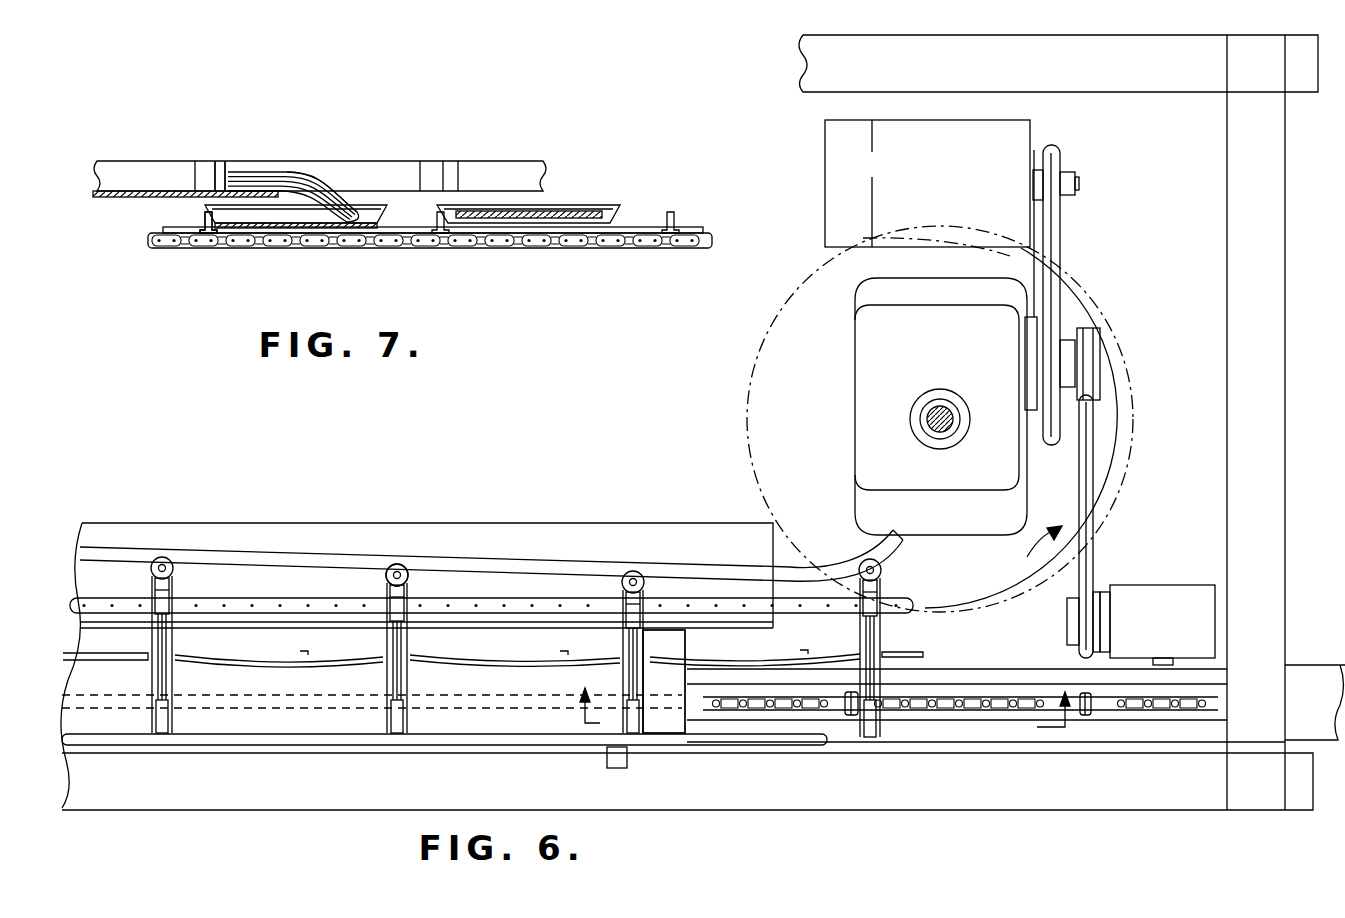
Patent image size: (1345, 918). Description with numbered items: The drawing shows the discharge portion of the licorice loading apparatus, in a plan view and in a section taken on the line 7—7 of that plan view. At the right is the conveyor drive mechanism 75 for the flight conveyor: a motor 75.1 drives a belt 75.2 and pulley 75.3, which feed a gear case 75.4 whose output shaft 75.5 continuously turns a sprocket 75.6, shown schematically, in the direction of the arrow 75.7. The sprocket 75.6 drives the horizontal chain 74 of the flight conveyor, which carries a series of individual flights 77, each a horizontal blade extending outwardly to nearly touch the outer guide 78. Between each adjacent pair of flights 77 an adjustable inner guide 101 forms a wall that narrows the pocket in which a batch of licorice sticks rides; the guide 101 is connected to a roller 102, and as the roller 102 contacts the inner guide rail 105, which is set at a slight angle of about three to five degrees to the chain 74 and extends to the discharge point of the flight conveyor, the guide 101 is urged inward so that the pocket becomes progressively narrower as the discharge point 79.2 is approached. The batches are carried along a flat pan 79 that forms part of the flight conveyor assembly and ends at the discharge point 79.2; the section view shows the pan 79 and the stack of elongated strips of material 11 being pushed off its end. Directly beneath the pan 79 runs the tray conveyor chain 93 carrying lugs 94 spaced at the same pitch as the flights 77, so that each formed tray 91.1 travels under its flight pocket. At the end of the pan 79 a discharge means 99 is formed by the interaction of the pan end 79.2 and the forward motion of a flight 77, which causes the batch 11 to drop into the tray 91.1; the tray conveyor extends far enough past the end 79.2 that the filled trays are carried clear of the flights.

In FIG. 7, the elongated strips of material 11 is at (320, 200).
In FIG. 6, the horizontal chain 74 is at (202, 597).
In FIG. 6, the conveyor drive mechanism 75 is at (852, 421).
In FIG. 6, the motor 75.1 is at (1030, 133).
In FIG. 6, the belt 75.2 is at (1050, 243).
In FIG. 6, the pulley 75.3 is at (1060, 304).
In FIG. 6, the gear case 75.4 is at (853, 330).
In FIG. 6, the output shaft 75.5 is at (932, 426).
In FIG. 6, the sprocket 75.6 is at (1105, 458).
In FIG. 6, the arrow 75.7 is at (1079, 563).
In FIG. 7, the flights 77 is at (220, 161).
In FIG. 6, the flights 77 is at (168, 720).
In FIG. 6, the outer guide 78 is at (320, 745).
In FIG. 7, the flat pan 79 is at (137, 161).
In FIG. 7, the discharge point 79.2 is at (288, 171).
In FIG. 6, the discharge point 79.2 is at (687, 730).
In FIG. 7, the tray 91.1 is at (391, 215).
In FIG. 7, the chain 93 is at (248, 240).
In FIG. 6, the chain 93 is at (947, 712).
In FIG. 7, the lugs 94 is at (190, 233).
In FIG. 6, the lugs 94 is at (851, 718).
In FIG. 7, the discharge means 99 is at (318, 158).
In FIG. 6, the adjustable inner guide 101 is at (443, 662).
In FIG. 6, the roller 102 is at (383, 564).
In FIG. 6, the inner guide rail 105 is at (498, 557).
In FIG. 6, the section line 7 is at (823, 737).